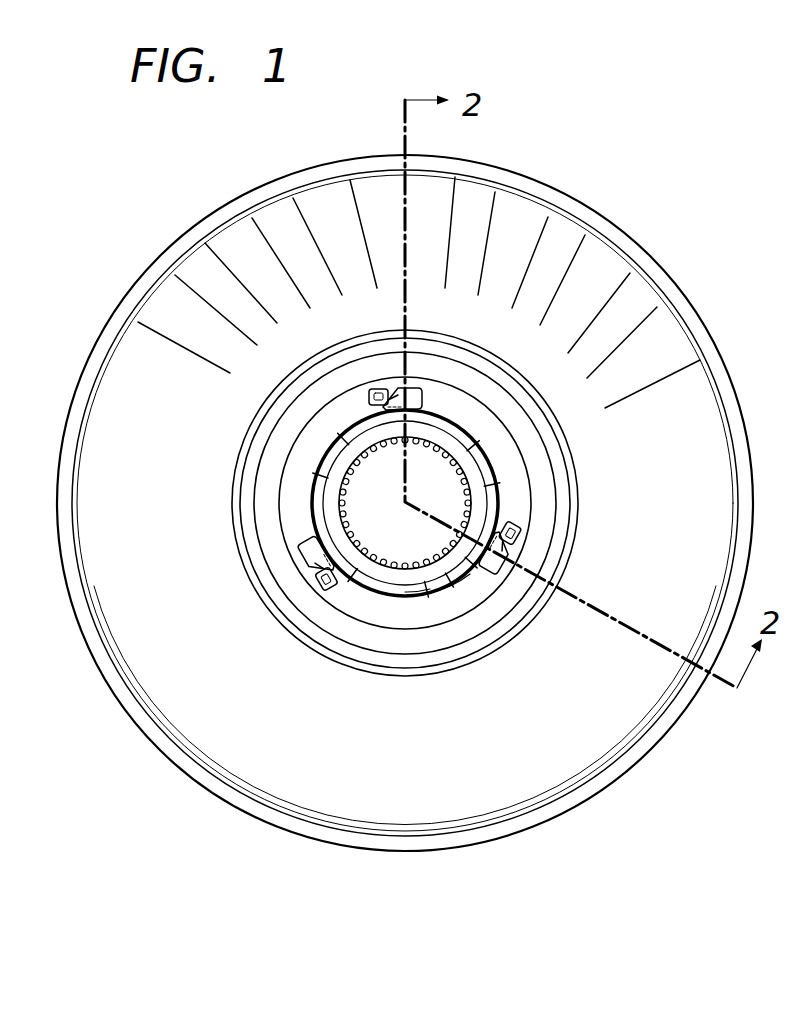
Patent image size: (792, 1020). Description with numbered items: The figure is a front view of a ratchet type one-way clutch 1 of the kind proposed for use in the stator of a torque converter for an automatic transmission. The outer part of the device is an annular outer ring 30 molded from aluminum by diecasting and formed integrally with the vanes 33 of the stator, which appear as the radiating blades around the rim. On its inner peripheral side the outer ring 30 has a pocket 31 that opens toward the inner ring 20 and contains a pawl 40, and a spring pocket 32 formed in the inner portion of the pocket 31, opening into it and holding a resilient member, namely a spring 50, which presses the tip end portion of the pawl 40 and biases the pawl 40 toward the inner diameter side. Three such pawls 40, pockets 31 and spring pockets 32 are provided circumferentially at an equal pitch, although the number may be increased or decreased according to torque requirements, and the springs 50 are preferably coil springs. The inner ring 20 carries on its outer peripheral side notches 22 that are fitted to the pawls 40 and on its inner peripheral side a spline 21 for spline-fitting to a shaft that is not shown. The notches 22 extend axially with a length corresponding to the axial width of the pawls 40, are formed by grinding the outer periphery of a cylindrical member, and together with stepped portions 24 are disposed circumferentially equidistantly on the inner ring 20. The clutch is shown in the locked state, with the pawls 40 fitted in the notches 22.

The ratchet type one-way clutch 1 is at (636, 214).
The inner ring 20 is at (352, 447).
The spline 21 is at (357, 545).
The notches 22 is at (413, 598).
The stepped portions 24 is at (443, 593).
The outer ring 30 is at (290, 481).
The pocket 31 is at (305, 552).
The spring pocket 32 is at (338, 598).
The vanes 33 is at (235, 245).
The pawl 40 is at (300, 562).
The spring 50 is at (318, 585).